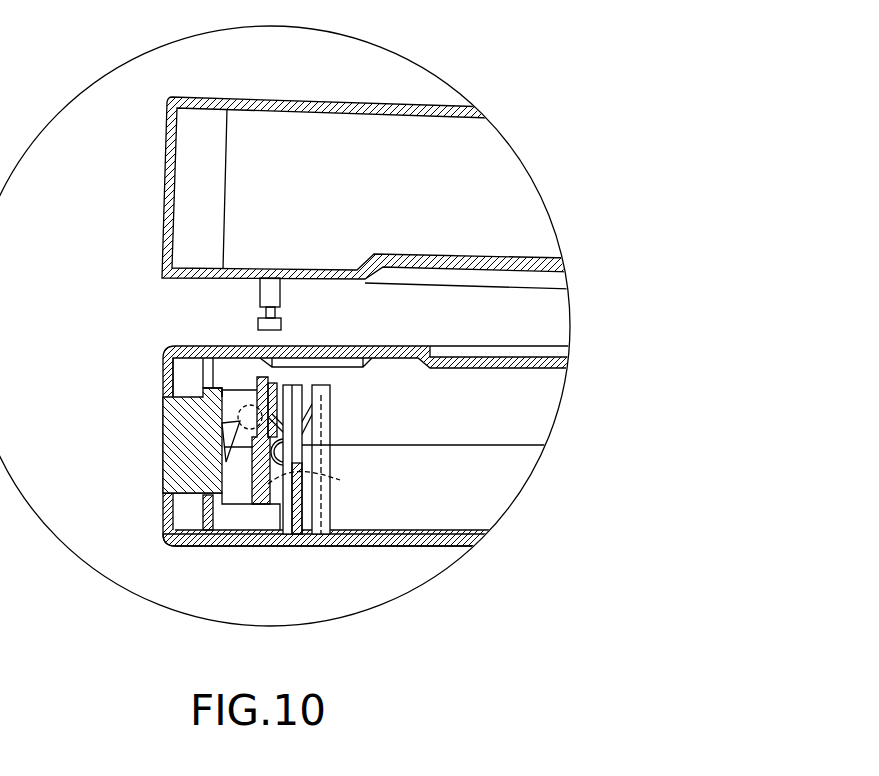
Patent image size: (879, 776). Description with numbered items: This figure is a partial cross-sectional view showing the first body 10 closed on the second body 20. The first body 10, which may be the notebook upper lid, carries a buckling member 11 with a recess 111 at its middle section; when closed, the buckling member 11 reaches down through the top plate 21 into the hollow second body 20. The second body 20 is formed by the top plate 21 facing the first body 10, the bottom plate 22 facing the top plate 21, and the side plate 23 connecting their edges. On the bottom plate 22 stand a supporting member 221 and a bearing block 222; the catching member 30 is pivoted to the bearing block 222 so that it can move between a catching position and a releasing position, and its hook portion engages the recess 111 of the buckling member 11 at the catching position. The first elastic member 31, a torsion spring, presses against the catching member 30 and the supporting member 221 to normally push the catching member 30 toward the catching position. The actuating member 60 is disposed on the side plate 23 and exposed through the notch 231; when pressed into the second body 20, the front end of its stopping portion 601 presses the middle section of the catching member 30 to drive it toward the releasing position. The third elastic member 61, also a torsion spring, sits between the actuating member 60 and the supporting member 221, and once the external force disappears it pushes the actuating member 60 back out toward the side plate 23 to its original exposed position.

The first body 10 is at (293, 100).
The buckling member 11 is at (268, 297).
The recess 111 is at (283, 314).
The second body 20 is at (163, 351).
The top plate 21 is at (247, 347).
The bottom plate 22 is at (418, 546).
The supporting member 221 is at (328, 497).
The bearing block 222 is at (340, 480).
The side plate 23 is at (163, 512).
The notch 231 is at (170, 482).
The catching member 30 is at (247, 496).
The first elastic member 31 is at (297, 458).
The actuating member 60 is at (163, 431).
The stopping portion 601 is at (238, 405).
The third elastic member 61 is at (224, 439).